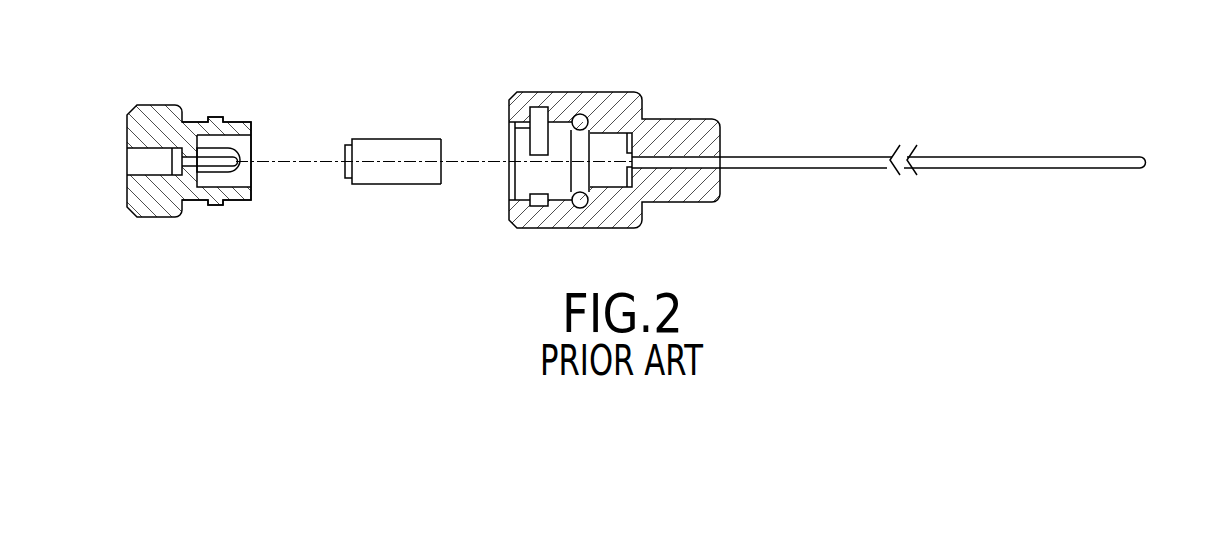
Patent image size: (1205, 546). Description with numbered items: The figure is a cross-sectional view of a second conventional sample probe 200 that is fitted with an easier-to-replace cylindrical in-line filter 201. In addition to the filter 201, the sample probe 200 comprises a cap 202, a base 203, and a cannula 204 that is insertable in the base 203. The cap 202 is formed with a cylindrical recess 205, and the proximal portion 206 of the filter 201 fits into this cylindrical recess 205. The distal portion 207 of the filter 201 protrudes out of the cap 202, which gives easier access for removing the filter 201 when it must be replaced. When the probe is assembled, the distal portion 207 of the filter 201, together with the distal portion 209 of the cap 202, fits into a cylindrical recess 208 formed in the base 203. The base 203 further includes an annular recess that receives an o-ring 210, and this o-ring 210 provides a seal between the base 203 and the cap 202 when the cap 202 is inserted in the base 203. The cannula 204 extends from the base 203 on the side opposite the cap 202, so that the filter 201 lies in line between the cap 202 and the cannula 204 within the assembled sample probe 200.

The sample probe 200 is at (406, 46).
The in-line filter 201 is at (382, 193).
The cap 202 is at (151, 229).
The base 203 is at (622, 84).
The cannula 204 is at (826, 156).
The cylindrical recess 205 is at (238, 177).
The proximal portion 206 is at (350, 196).
The distal portion 207 is at (418, 193).
The cylindrical recess 208 is at (534, 175).
The distal portion 209 is at (238, 208).
The o-ring 210 is at (579, 114).